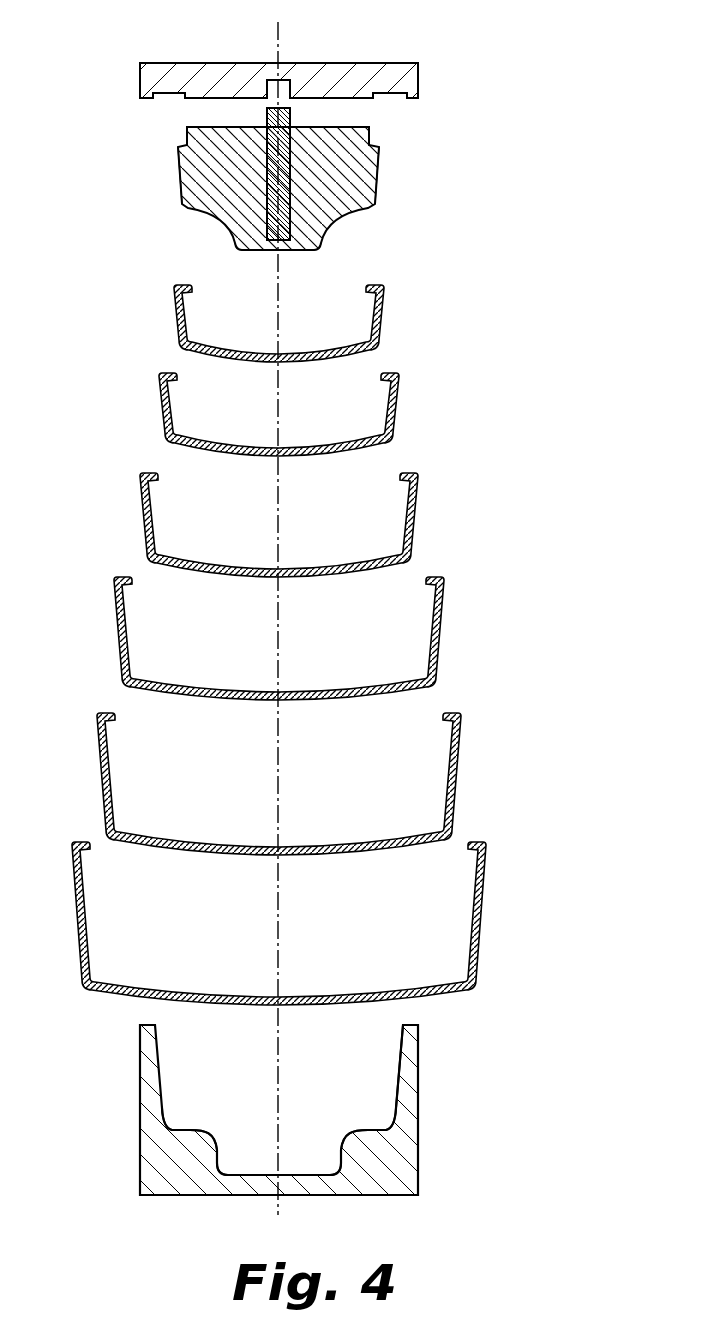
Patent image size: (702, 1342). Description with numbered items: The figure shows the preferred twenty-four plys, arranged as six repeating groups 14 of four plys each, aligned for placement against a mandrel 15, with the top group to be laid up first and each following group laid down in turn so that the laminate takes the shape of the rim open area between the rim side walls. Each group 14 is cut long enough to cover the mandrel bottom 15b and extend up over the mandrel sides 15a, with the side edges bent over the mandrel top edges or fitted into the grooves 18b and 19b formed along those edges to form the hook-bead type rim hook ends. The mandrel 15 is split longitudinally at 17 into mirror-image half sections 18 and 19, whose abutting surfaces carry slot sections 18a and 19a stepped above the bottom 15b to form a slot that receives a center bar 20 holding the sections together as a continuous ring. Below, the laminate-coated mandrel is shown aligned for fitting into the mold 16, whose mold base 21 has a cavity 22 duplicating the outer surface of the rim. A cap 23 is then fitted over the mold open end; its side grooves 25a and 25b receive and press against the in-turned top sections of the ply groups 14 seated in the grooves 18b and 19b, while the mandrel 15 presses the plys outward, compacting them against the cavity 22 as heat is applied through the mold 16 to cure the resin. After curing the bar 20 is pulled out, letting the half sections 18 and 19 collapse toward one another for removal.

The group of plys 14 is at (390, 306).
The mandrel 15 is at (294, 154).
The mandrel sides 15a is at (177, 175).
The mandrel bottom 15b is at (258, 255).
The mold 16 is at (350, 1110).
The split 17 is at (313, 247).
The mandrel half section 18 is at (197, 193).
The slot section 18a is at (257, 163).
The groove 18b is at (187, 136).
The mandrel half section 19 is at (373, 197).
The slot section 19a is at (294, 153).
The groove 19b is at (373, 137).
The bar 20 is at (283, 133).
The mold base 21 is at (418, 1125).
The cavity 22 is at (400, 1090).
The cap 23 is at (373, 68).
The side groove 25a is at (168, 97).
The side groove 25b is at (400, 104).